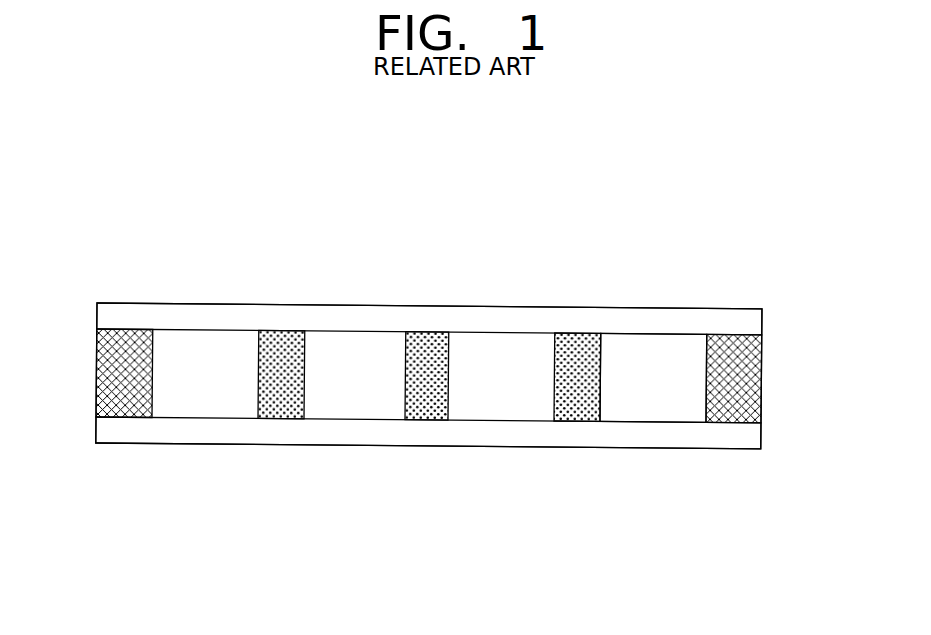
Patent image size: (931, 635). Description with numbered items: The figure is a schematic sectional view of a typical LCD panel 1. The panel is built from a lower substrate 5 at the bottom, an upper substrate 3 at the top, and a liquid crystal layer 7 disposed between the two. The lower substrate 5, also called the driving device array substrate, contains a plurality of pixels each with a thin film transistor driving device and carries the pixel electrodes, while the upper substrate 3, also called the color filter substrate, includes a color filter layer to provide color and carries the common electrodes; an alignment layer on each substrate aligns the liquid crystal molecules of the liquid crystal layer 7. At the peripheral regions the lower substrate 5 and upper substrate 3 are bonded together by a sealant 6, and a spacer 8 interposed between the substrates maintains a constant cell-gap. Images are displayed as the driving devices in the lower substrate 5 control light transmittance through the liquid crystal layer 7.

The LCD panel 1 is at (438, 337).
The upper substrate 3 is at (753, 320).
The lower substrate 5 is at (753, 435).
The sealant 6 is at (753, 379).
The liquid crystal layer 7 is at (654, 340).
The spacer 8 is at (577, 333).